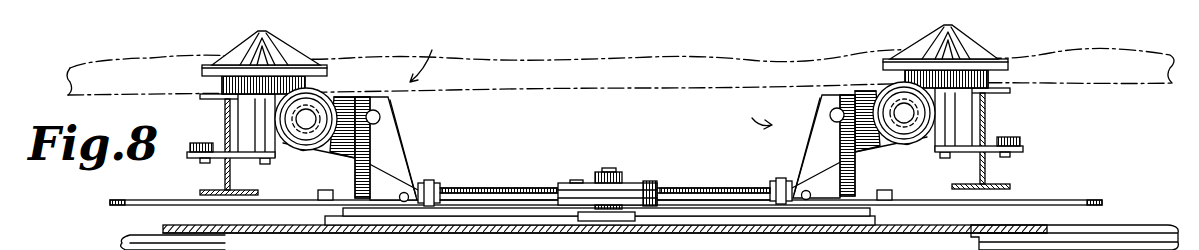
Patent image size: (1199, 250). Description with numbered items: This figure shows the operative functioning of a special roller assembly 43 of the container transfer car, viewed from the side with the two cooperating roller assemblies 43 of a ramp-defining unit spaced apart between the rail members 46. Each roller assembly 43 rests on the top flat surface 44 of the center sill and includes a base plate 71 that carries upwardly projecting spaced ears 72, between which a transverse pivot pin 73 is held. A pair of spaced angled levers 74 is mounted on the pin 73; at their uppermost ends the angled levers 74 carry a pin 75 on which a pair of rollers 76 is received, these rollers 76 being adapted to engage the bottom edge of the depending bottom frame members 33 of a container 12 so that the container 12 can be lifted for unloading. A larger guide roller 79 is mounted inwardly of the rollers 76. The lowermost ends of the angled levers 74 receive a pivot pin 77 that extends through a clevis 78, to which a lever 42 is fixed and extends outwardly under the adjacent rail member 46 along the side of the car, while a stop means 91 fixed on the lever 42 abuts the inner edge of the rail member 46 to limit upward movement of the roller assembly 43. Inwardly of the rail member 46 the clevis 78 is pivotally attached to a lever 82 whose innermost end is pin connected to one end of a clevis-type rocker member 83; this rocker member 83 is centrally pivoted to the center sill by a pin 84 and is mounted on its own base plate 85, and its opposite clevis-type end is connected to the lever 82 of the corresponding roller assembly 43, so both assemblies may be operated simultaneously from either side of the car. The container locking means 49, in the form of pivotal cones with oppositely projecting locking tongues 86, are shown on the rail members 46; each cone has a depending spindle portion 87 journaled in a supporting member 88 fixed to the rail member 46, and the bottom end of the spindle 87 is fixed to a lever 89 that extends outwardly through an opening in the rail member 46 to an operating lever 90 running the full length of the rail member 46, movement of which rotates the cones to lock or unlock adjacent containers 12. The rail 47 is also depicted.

The container 12 is at (576, 98).
The depending bottom frame member 33 is at (505, 97).
The lever 42 is at (160, 205).
The roller assembly 43 is at (591, 79).
The top flat surface 44 is at (660, 230).
The rail member 46 is at (224, 121).
The rail 47 is at (70, 0).
The container locking means 49 is at (268, 33).
The base plate 71 is at (343, 216).
The ear 72 is at (392, 132).
The pivot pin 73 is at (376, 110).
The angled lever 74 is at (362, 96).
The pin 75 is at (312, 119).
The roller 76 is at (297, 148).
The pivot pin 77 is at (404, 202).
The clevis 78 is at (428, 183).
The guide roller 79 is at (333, 96).
The lever 82 is at (472, 188).
The rocker member 83 is at (654, 182).
The pin 84 is at (612, 172).
The base plate 85 is at (590, 218).
The locking tongue 86 is at (233, 62).
The spindle portion 87 is at (283, 159).
The supporting member 88 is at (265, 97).
The lever 89 is at (244, 158).
The operating lever 90 is at (190, 152).
The stop means 91 is at (324, 184).